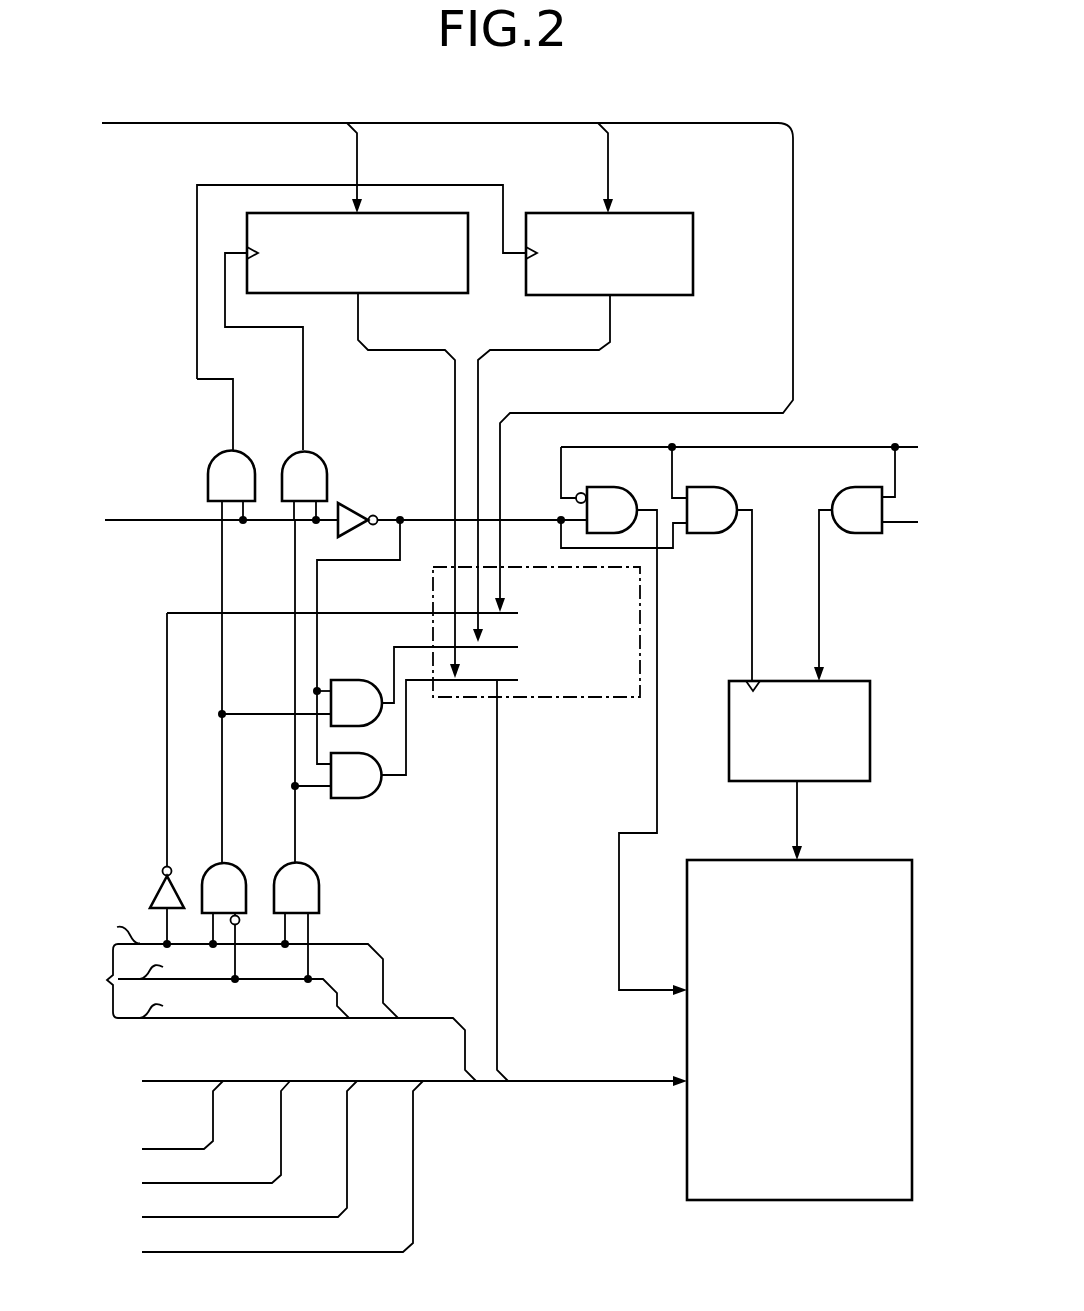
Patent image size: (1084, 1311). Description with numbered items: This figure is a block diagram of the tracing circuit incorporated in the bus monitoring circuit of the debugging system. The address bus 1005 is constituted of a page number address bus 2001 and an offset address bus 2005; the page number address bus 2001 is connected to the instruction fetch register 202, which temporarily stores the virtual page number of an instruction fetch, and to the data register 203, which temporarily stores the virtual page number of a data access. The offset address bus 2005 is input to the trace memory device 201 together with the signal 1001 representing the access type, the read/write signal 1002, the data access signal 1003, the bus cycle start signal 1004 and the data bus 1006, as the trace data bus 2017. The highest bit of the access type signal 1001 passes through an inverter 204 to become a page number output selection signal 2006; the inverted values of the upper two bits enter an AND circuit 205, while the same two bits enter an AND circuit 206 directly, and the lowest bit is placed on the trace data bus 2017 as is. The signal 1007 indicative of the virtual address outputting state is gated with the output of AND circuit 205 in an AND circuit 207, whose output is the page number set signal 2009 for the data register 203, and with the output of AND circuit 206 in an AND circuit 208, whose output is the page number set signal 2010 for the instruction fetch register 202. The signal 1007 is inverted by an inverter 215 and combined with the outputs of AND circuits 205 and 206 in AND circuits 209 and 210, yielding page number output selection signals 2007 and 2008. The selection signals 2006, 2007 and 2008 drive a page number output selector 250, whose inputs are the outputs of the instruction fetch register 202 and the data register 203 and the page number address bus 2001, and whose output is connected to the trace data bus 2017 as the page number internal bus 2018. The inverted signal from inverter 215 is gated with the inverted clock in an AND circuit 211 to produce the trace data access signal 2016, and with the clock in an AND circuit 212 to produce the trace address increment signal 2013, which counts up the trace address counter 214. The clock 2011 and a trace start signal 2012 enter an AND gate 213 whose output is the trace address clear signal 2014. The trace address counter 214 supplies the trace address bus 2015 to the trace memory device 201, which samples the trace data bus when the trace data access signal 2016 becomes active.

The page number address bus 2001 is at (240, 122).
The address bus 1005 is at (423, 612).
The page number set signal for the data 2009 is at (197, 293).
The page number set signal for the instruction fetch 2010 is at (303, 378).
The instruction fetch register 202 is at (447, 295).
The data register 203 is at (693, 243).
The AND circuit 207 is at (215, 455).
The AND circuit 208 is at (323, 452).
The inverter 215 is at (358, 505).
The signal indicative of virtual address outputting state 1007 is at (137, 520).
The page number output selection signal 2006 is at (390, 598).
The AND circuit 209 is at (350, 680).
The AND circuit 210 is at (357, 798).
The page number output selection signal 2007 is at (422, 650).
The page number output selection signal 2008 is at (400, 778).
The page number internal bus 2018 is at (497, 1020).
The page number output selector 250 is at (592, 697).
The clock 2011 is at (845, 447).
The AND circuit 211 is at (648, 478).
The AND circuit 212 is at (750, 478).
The AND gate 213 is at (832, 497).
The trace start signal 2012 is at (900, 522).
The trace address increment signal 2013 is at (750, 628).
The trace address clear signal 2014 is at (819, 628).
The trace address counter 214 is at (870, 752).
The trace address bus 2015 is at (797, 822).
The trace memory device 201 is at (795, 1200).
The trace data access signal 2016 is at (619, 908).
The trace data bus 2017 is at (585, 1085).
The inverter 204 is at (162, 878).
The AND circuit 205 is at (240, 864).
The AND circuit 206 is at (319, 890).
The signal representing the type of access 1001 is at (264, 989).
The offset address bus 2005 is at (157, 1082).
The data bus 1006 is at (158, 1149).
The bus cycle start signal 1004 is at (158, 1184).
The data access signal 1003 is at (158, 1218).
The read/write signal 1002 is at (413, 1170).